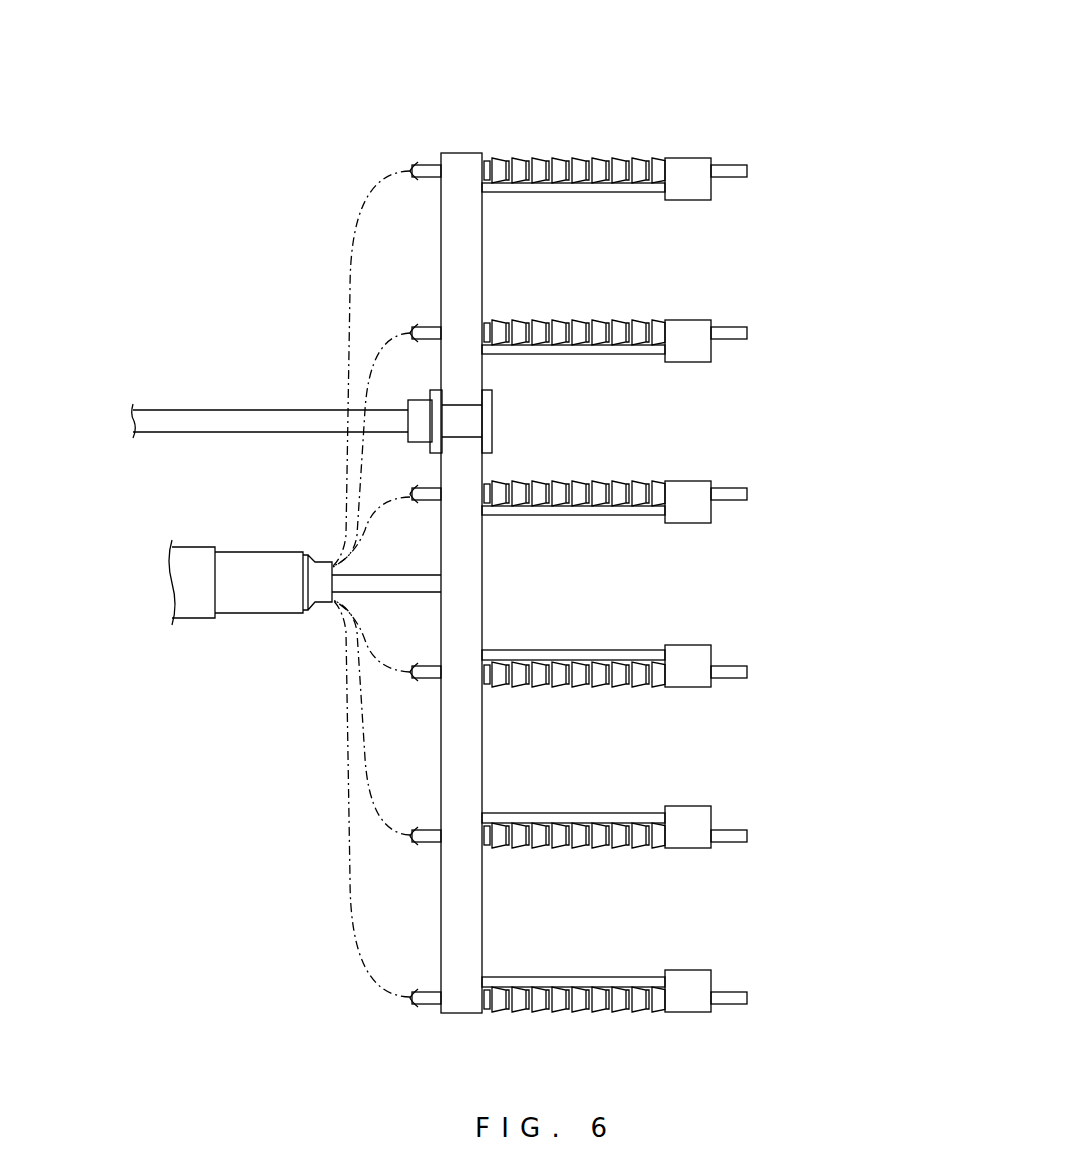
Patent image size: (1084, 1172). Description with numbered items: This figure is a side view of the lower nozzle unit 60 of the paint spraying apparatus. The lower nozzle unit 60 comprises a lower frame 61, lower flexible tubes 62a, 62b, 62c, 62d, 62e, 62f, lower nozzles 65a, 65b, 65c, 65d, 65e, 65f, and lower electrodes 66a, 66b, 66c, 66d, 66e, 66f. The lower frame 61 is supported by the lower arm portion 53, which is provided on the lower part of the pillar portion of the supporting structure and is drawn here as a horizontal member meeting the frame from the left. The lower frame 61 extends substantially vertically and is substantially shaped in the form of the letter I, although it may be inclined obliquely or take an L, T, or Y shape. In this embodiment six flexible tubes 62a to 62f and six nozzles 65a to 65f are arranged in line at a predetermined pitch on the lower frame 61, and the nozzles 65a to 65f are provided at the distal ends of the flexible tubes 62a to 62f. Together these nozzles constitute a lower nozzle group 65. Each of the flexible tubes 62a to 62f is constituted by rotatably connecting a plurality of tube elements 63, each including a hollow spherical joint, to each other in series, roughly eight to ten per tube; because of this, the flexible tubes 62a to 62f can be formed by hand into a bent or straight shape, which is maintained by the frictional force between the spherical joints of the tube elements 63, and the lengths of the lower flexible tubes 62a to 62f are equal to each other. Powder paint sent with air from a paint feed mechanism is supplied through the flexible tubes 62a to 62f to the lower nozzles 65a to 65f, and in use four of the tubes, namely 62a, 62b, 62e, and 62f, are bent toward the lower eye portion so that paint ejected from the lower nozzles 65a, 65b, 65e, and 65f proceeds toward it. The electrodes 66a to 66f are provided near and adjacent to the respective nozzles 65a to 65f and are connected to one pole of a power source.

The lower arm portion 53 is at (200, 408).
The lower nozzle unit 60 is at (296, 224).
The lower frame 61 is at (472, 577).
The lower flexible tube 62a is at (562, 158).
The lower flexible tube 62b is at (560, 320).
The lower flexible tube 62c is at (560, 481).
The lower flexible tube 62d is at (572, 687).
The lower flexible tube 62e is at (572, 848).
The lower flexible tube 62f is at (572, 1012).
The tube element 63 is at (542, 158).
The lower nozzle group 65 is at (702, 88).
The lower nozzle 65a is at (730, 165).
The lower nozzle 65b is at (730, 327).
The lower nozzle 65c is at (730, 488).
The lower nozzle 65d is at (728, 665).
The lower nozzle 65e is at (727, 830).
The lower nozzle 65f is at (725, 993).
The lower electrode 66a is at (575, 192).
The lower electrode 66b is at (575, 353).
The lower electrode 66c is at (577, 516).
The lower electrode 66d is at (558, 650).
The lower electrode 66e is at (560, 813).
The lower electrode 66f is at (558, 978).